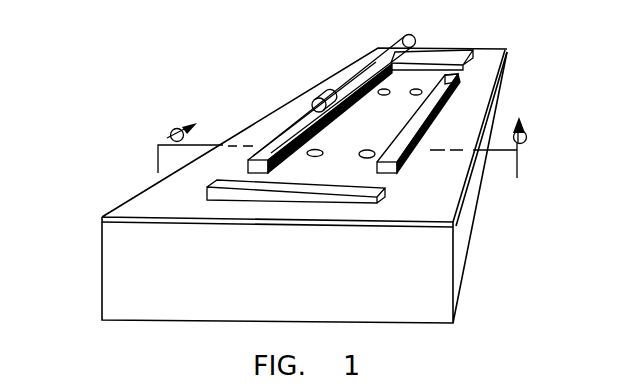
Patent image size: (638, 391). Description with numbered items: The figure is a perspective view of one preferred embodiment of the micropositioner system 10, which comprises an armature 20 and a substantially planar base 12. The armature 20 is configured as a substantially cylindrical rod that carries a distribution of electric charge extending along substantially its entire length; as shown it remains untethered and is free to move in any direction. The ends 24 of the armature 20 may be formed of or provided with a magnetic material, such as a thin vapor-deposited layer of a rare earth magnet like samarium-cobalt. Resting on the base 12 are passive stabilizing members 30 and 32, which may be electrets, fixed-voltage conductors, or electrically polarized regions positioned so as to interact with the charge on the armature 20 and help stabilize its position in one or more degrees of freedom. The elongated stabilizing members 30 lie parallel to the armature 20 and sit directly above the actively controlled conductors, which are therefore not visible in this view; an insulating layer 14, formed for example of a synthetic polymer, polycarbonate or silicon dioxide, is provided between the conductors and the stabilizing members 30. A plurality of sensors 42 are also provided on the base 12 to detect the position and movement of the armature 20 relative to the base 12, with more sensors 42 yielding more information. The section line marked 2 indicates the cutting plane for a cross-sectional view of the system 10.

The micropositioner system 10 is at (210, 80).
The base 12 is at (127, 257).
The insulating layer 14 is at (148, 207).
The section line 2- 2 is at (345, 147).
The armature 20 is at (360, 75).
The ends of armature 24 is at (403, 40).
The stabilizing members 30 is at (287, 138).
The stabilizing members 32 is at (452, 58).
The sensors 42 is at (385, 91).